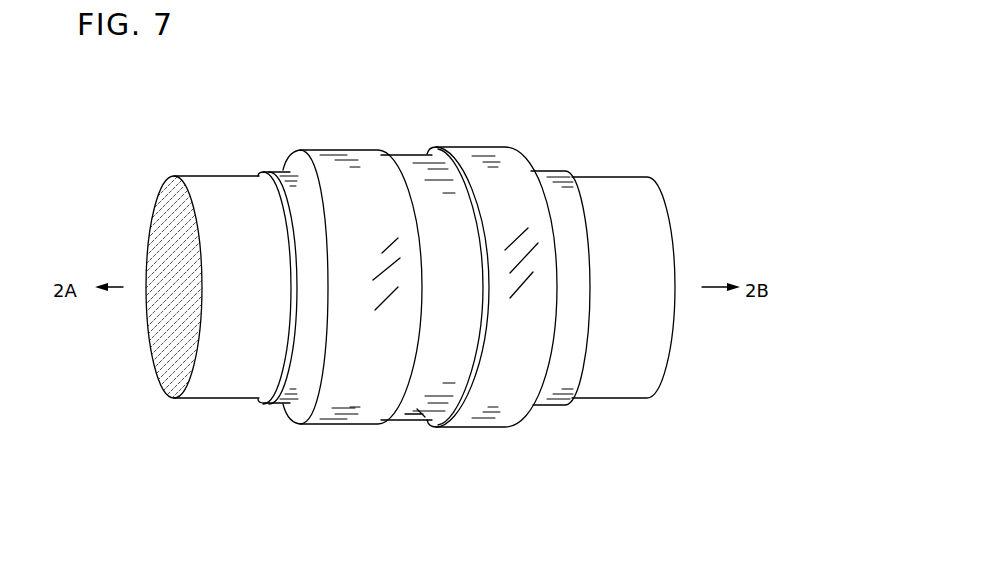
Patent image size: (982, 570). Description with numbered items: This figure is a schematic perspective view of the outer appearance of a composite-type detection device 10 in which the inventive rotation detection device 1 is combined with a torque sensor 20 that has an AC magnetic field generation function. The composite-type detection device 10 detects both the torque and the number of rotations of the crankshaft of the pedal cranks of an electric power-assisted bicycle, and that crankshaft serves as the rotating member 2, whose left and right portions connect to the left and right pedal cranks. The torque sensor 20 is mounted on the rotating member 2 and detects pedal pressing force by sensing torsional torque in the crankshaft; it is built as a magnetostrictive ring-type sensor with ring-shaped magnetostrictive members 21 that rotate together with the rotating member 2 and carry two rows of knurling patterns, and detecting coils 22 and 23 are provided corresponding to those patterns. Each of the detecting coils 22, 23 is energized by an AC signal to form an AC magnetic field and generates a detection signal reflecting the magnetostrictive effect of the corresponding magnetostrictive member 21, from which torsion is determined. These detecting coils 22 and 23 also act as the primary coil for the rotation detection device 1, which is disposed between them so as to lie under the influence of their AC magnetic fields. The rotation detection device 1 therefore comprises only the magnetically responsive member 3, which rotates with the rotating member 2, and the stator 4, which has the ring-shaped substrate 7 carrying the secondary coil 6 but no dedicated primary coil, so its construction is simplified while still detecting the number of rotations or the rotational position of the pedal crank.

The composite-type detection device 10 is at (216, 122).
The rotating member 2 is at (228, 180).
The magnetostrictive member 21 is at (271, 170).
The detecting coil 22 is at (297, 151).
The rotation detection device 1 is at (404, 147).
The detecting coil 23 is at (467, 146).
The torque sensor 20 is at (597, 141).
The stator 4 is at (423, 422).
The ring-shaped substrate 7 is at (453, 460).
The secondary coil 6 is at (468, 343).
The magnetically responsive member 3 is at (435, 462).